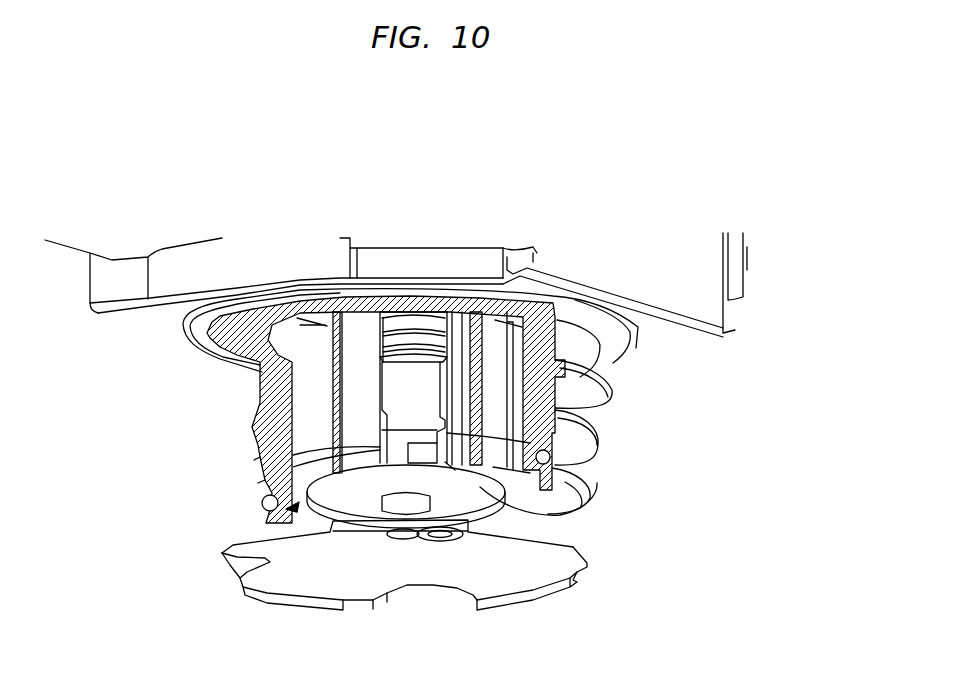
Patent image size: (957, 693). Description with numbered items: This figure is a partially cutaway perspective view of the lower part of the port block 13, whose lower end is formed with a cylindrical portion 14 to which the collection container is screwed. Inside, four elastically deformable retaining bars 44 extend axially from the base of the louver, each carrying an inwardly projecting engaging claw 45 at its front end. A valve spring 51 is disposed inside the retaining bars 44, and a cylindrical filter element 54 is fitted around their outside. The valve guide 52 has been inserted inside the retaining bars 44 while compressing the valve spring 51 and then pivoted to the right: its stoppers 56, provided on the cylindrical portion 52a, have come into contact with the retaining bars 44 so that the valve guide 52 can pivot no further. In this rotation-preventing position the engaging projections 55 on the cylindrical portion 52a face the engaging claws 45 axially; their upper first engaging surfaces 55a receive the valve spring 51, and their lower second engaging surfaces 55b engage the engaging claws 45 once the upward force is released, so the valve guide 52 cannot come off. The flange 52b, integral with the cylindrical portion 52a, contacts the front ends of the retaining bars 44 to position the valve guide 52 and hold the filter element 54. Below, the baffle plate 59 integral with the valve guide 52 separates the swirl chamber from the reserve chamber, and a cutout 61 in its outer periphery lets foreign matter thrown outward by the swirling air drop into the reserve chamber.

The port block 13 is at (693, 293).
The cylindrical portion 14 is at (548, 384).
The retaining bars 44 is at (363, 368).
The engaging claws 45 is at (267, 477).
The valve spring 51 is at (428, 318).
The valve guide 52 is at (265, 523).
The cylindrical portion 52a is at (403, 428).
The flange 52b is at (360, 500).
The filter element 54 is at (530, 513).
The engaging projections 55 is at (440, 390).
The first engaging surfaces 55a is at (397, 316).
The second engaging surfaces 55b is at (455, 470).
The stoppers 56 is at (433, 500).
The baffle plate 59 is at (400, 573).
The cutout 61 is at (233, 577).